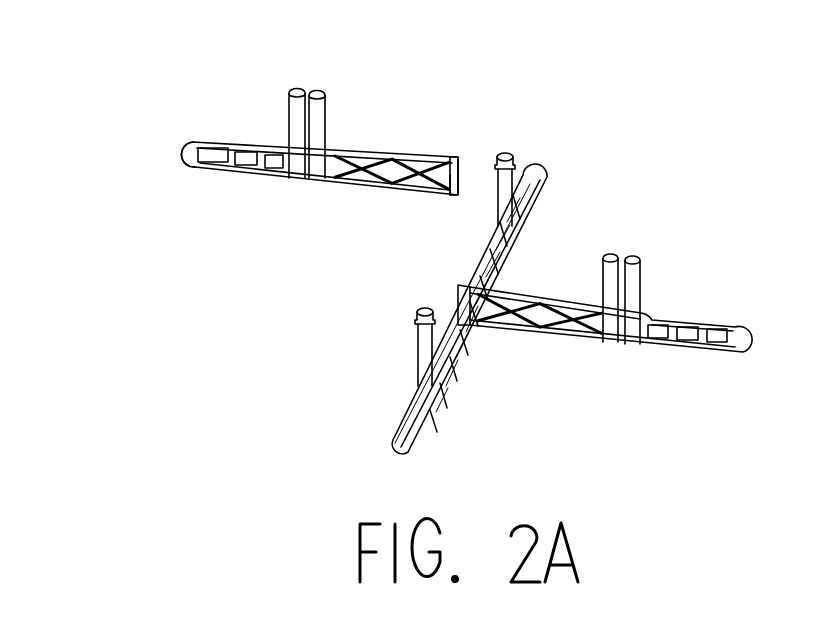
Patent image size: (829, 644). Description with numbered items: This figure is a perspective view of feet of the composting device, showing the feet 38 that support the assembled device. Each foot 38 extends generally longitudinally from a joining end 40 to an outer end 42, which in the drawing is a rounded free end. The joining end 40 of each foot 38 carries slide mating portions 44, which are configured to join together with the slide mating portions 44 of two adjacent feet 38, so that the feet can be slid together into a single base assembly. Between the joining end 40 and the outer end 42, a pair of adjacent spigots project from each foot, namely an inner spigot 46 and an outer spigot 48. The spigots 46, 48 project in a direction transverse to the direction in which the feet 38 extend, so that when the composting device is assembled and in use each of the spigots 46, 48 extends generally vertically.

The foot 38 is at (267, 176).
The joining end 40 is at (460, 155).
The outer end 42 is at (190, 162).
The slide mating portion 44 is at (452, 199).
The inner spigot 46 is at (325, 92).
The outer spigot 48 is at (295, 90).